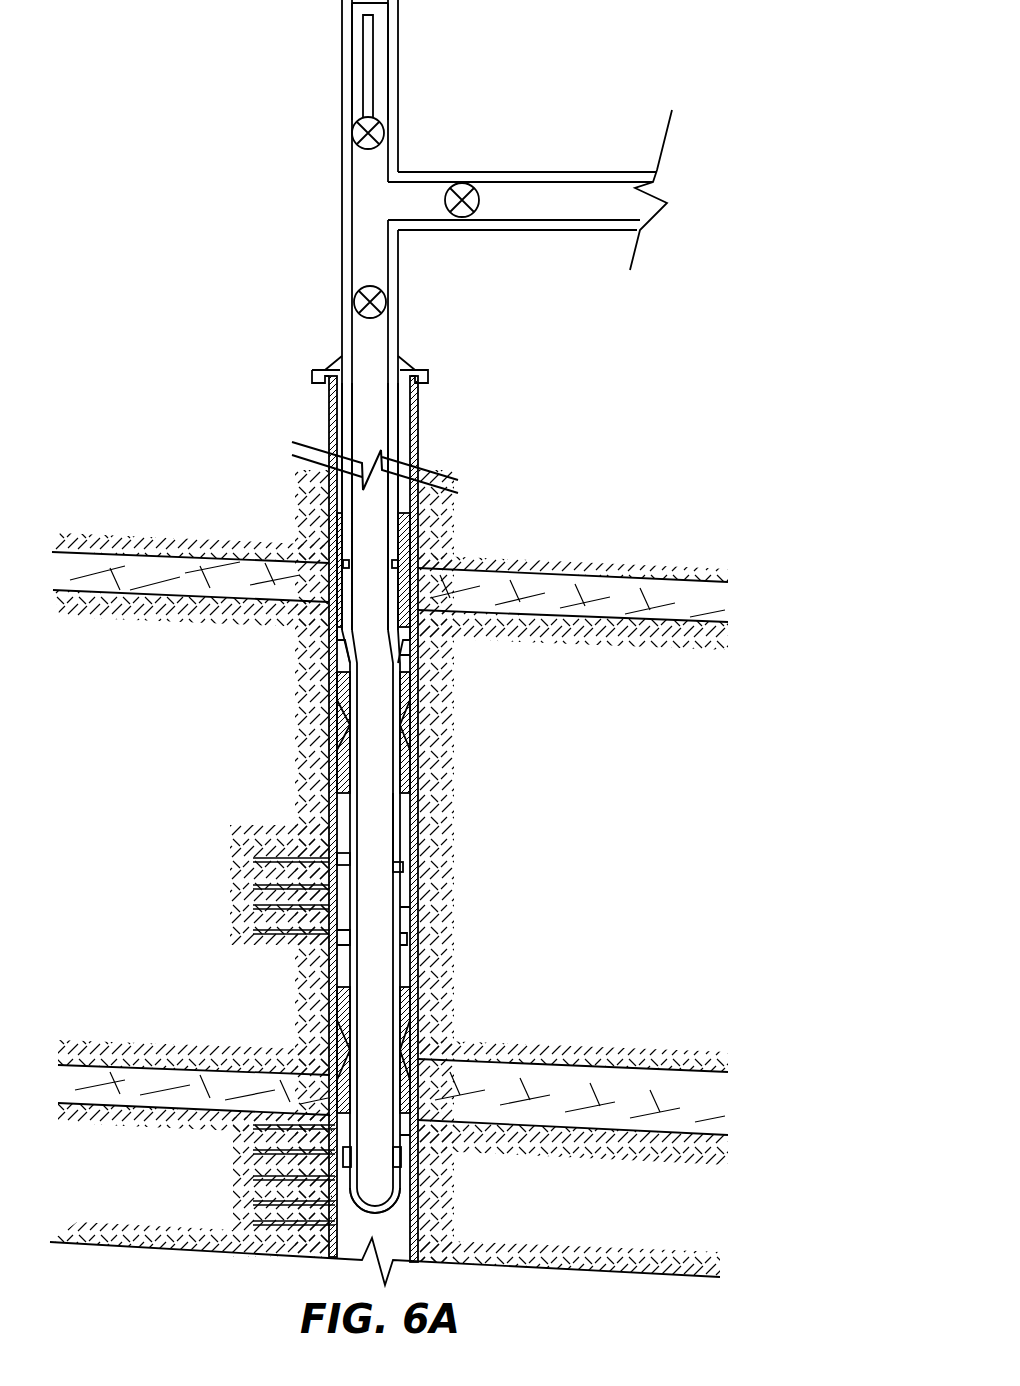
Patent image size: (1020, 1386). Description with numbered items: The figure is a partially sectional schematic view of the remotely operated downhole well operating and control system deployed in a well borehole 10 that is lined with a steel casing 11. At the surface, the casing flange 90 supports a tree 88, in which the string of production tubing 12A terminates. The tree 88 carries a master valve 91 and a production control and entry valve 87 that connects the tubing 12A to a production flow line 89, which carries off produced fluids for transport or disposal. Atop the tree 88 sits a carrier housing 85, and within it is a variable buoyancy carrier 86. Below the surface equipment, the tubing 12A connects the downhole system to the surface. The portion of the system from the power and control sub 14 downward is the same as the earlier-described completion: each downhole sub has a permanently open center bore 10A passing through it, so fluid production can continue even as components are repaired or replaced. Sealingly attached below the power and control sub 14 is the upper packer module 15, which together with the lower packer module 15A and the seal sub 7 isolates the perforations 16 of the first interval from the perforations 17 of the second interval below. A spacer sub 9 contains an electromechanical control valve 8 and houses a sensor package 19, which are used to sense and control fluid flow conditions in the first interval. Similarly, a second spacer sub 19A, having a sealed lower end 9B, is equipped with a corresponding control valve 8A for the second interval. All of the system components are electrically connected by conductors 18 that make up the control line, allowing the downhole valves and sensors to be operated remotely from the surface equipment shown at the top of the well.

The seal sub 7 is at (405, 940).
The electromechanical control valve 8 is at (402, 867).
The control valve 8A is at (405, 1157).
The spacer sub 9 is at (400, 810).
The sealed lower end 9B is at (400, 1205).
The borehole 10 is at (333, 412).
The permanently open center bore 10A is at (360, 610).
The steel casing 11 is at (325, 497).
The production tubing string 12A is at (393, 430).
The power and control sub 14 is at (413, 592).
The upper packer module 15 is at (418, 730).
The lower packer module 15A is at (418, 1050).
The perforations of Interval #1 16 is at (255, 888).
The perforations of interval #2 17 is at (247, 1202).
The conductors 18 is at (408, 655).
The sensor package 19 is at (345, 862).
The second spacer sub 19A is at (342, 1157).
The carrier housing 85 is at (390, 44).
The variable buoyancy carrier 86 is at (372, 95).
The production control and entry valve 87 is at (357, 303).
The tree 88 is at (465, 188).
The production flow line 89 is at (520, 202).
The casing flange 90 is at (313, 375).
The master valve 91 is at (383, 135).